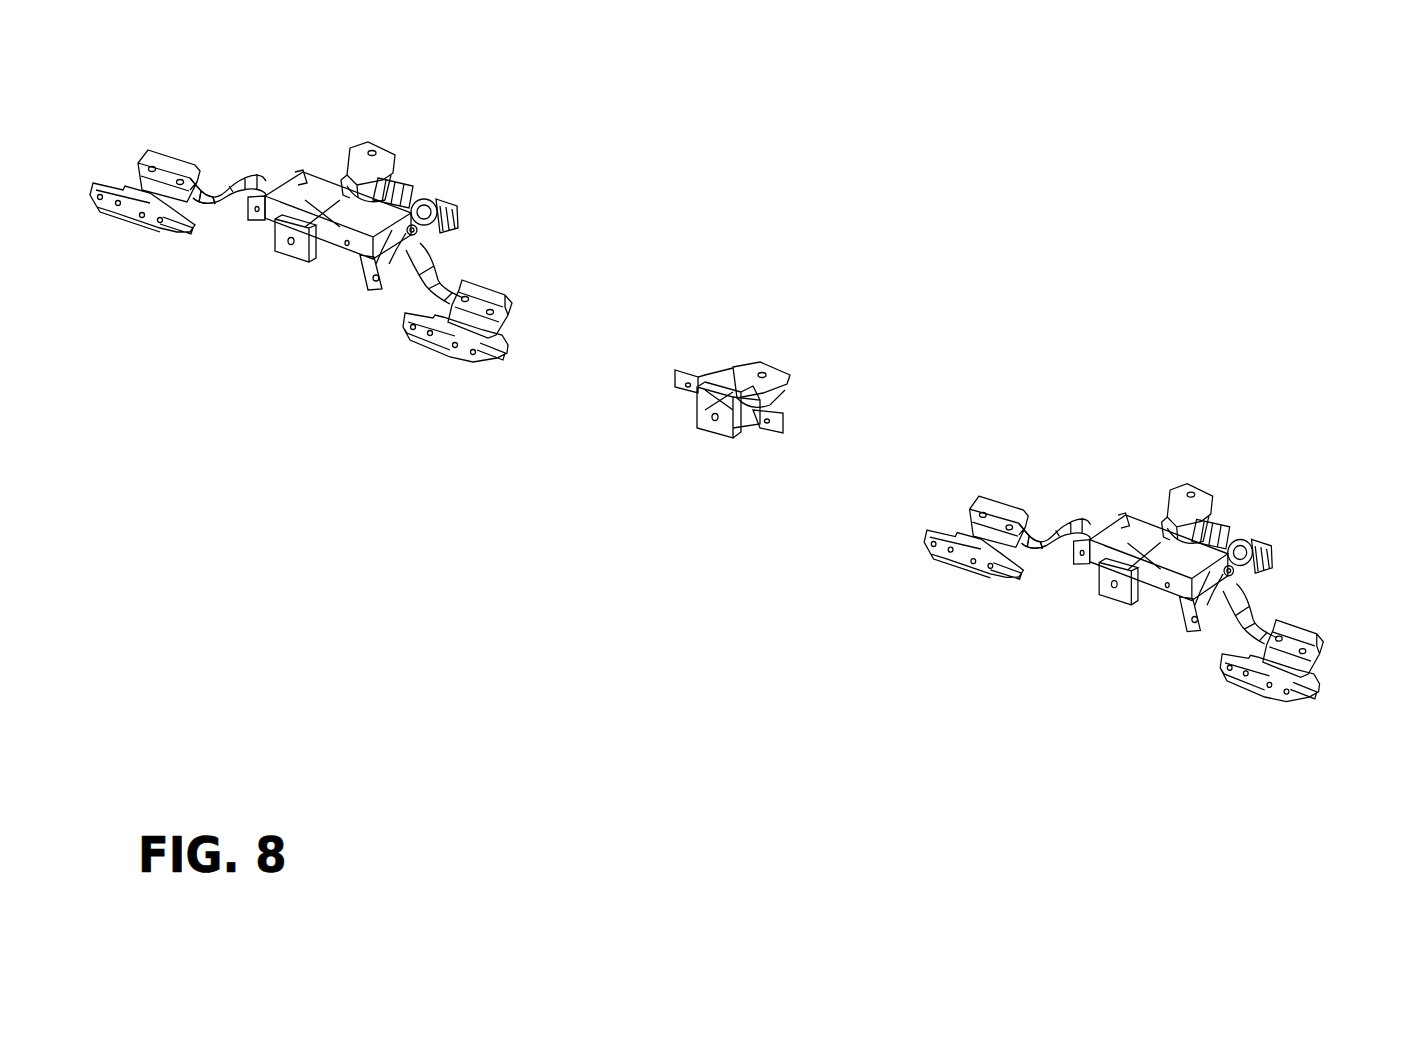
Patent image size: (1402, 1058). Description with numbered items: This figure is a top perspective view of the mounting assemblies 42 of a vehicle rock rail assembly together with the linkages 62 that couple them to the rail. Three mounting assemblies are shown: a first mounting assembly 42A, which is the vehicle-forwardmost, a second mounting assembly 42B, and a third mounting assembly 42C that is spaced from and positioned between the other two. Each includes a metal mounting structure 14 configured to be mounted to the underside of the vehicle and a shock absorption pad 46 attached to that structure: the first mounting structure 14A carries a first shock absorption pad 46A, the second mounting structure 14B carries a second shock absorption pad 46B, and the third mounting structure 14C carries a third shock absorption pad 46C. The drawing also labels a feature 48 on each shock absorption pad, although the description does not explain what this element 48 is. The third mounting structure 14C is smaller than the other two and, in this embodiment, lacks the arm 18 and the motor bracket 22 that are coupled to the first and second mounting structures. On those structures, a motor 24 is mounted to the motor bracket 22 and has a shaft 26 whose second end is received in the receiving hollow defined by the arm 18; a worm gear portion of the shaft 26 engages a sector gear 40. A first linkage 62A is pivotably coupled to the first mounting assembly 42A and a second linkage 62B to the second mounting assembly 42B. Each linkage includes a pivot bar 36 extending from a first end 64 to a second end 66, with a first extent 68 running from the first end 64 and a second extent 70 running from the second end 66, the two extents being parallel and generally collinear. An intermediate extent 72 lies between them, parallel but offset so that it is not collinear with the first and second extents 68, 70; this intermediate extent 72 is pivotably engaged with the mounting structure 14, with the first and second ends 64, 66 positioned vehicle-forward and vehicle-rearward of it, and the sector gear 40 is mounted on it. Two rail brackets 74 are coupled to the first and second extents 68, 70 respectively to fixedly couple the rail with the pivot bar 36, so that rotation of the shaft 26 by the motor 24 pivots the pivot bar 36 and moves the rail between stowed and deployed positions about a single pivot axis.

The mounting structure 14 is at (746, 348).
The first mounting structure 14A is at (355, 148).
The second mounting structure 14B is at (1133, 524).
The third mounting structure 14C is at (755, 372).
The arm 18 is at (428, 197).
The motor bracket 22 is at (414, 186).
The motor 24 is at (420, 228).
The shaft 26 is at (455, 198).
The pivot bar 36 is at (456, 261).
The sector gear 40 is at (443, 238).
The mounting assembly 42 is at (809, 281).
The first mounting assembly 42A is at (388, 140).
The second mounting assembly 42B is at (1172, 527).
The third mounting assembly 42C is at (786, 362).
The shock absorption pad 46 is at (641, 438).
The first shock absorption pad 46A is at (266, 235).
The second shock absorption pad 46B is at (1089, 578).
The third shock absorption pad 46C is at (688, 413).
The fastener hole 48 is at (293, 245).
The linkage 62 is at (646, 292).
The first linkage 62A is at (237, 161).
The second linkage 62B is at (1055, 506).
The first end 64 is at (142, 162).
The second end 66 is at (505, 316).
The first extent 68 is at (212, 185).
The second extent 70 is at (440, 284).
The intermediate extent 72 is at (263, 183).
The rail bracket 74 is at (131, 211).